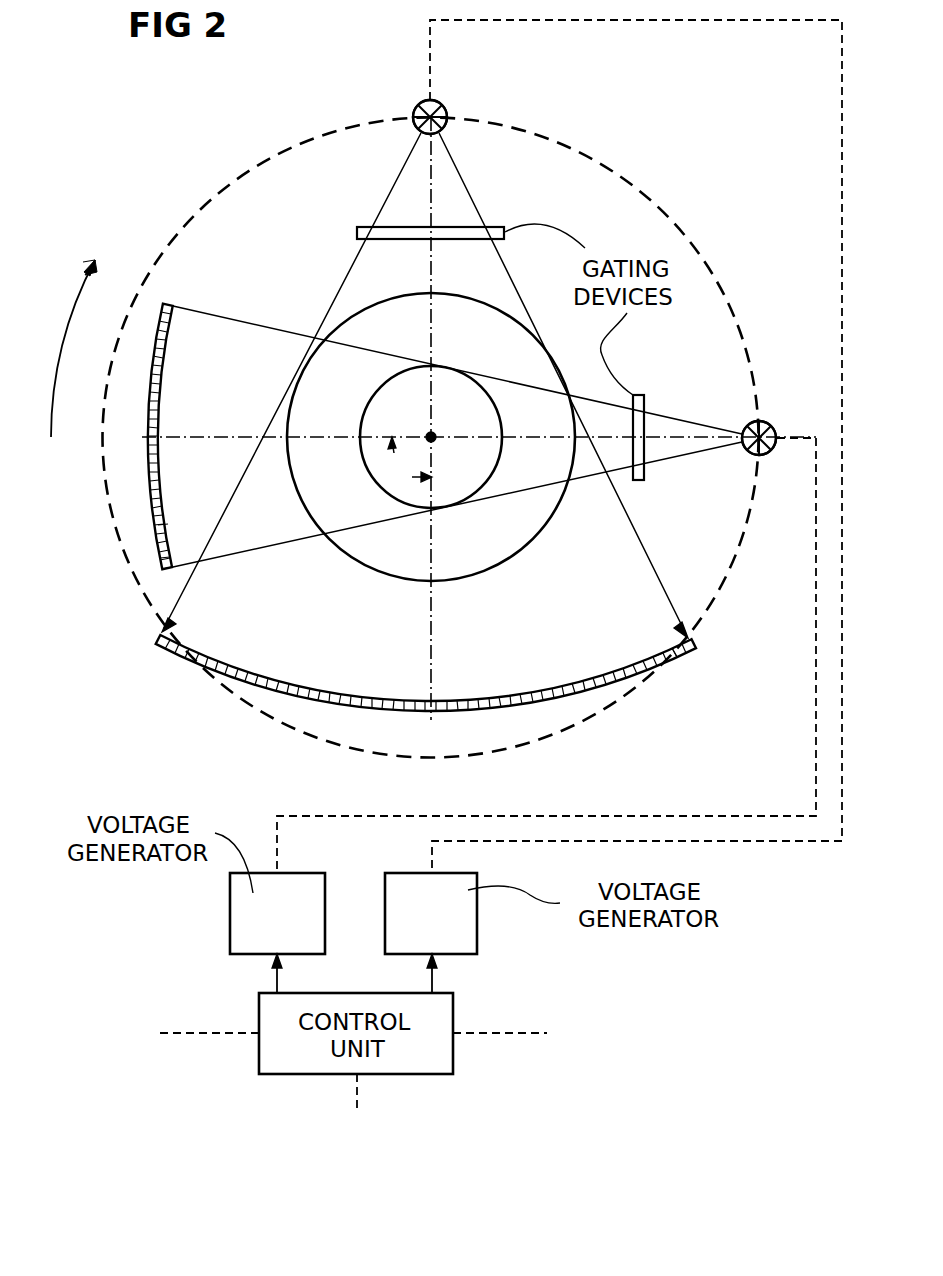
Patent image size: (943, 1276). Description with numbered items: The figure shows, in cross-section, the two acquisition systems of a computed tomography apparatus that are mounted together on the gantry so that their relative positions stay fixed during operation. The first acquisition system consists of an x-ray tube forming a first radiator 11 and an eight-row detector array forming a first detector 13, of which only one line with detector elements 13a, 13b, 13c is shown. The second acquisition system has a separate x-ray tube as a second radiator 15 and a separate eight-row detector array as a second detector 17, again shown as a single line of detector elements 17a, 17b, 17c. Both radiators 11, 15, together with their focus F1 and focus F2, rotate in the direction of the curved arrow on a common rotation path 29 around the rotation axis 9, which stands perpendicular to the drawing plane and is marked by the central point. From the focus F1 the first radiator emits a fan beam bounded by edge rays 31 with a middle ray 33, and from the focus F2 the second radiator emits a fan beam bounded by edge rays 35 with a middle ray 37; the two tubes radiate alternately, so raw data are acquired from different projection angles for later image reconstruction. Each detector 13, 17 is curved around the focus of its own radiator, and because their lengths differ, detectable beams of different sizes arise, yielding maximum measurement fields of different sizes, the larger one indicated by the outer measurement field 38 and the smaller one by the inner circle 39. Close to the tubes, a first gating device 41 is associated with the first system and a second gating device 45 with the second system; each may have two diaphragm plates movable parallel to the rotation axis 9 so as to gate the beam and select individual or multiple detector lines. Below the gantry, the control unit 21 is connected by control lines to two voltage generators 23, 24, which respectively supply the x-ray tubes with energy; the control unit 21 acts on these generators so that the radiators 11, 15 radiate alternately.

The rotation axis 9 is at (434, 441).
The first radiator 11 is at (417, 105).
The first detector 13 is at (700, 646).
The detector element 13a is at (700, 658).
The detector element 13b is at (683, 667).
The detector element 13c is at (657, 672).
The second radiator 15 is at (773, 421).
The second detector 17 is at (173, 302).
The detector element 17a is at (165, 565).
The detector element 17b is at (160, 557).
The detector element 17c is at (157, 533).
The control unit 21 is at (453, 1048).
The voltage generator 23 is at (477, 912).
The voltage generator 24 is at (230, 912).
The rotation path 29 is at (607, 167).
The edge rays 31 is at (353, 262).
The middle ray 33 is at (432, 313).
The edge rays 35 is at (235, 318).
The middle ray 37 is at (197, 433).
The maximum measurement field 38 is at (552, 515).
The inner measurement field 39 is at (365, 470).
The first gating device 41 is at (500, 227).
The second gating device 45 is at (640, 395).
The focus F1 is at (443, 103).
The focus F2 is at (748, 453).